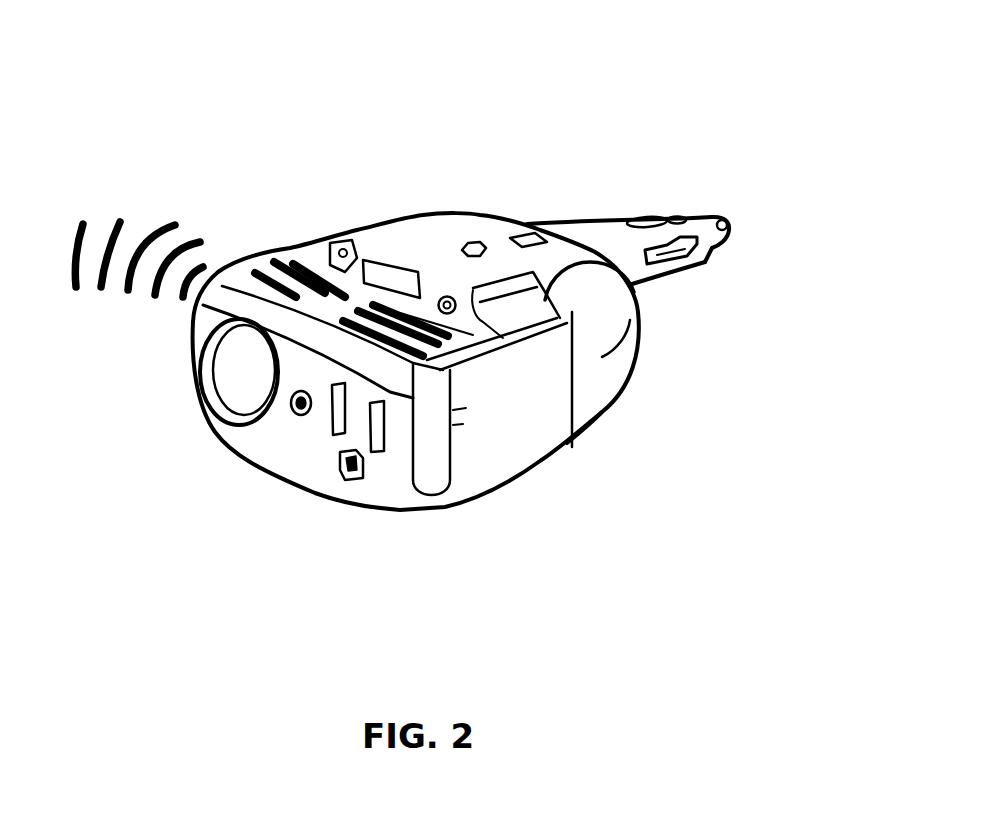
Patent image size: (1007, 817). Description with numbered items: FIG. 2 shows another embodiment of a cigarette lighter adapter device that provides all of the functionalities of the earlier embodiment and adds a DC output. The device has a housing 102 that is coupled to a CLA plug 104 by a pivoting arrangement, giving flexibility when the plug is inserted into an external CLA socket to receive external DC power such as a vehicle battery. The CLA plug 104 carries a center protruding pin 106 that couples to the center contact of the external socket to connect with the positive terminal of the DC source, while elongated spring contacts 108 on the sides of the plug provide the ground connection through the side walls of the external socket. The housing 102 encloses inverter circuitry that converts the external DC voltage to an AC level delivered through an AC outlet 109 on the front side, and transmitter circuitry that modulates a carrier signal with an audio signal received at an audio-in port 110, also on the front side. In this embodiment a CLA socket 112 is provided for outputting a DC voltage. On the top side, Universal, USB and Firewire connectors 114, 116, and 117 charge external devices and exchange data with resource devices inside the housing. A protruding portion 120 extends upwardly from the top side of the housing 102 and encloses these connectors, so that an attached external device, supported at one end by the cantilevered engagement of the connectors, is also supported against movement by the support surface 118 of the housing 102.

The housing 102 is at (537, 443).
The CLA plug 104 is at (690, 274).
The center protruding pin 106 is at (750, 210).
The elongated spring contacts 108 is at (685, 232).
The AC outlet 109 is at (375, 469).
The audio-in port 110 is at (298, 415).
The CLA socket 112 is at (229, 382).
The Universal connector 114 is at (390, 278).
The USB connector 116 is at (343, 244).
The Firewire connector 117 is at (447, 296).
The support surface 118 is at (270, 258).
The protruding portion 120 is at (428, 232).